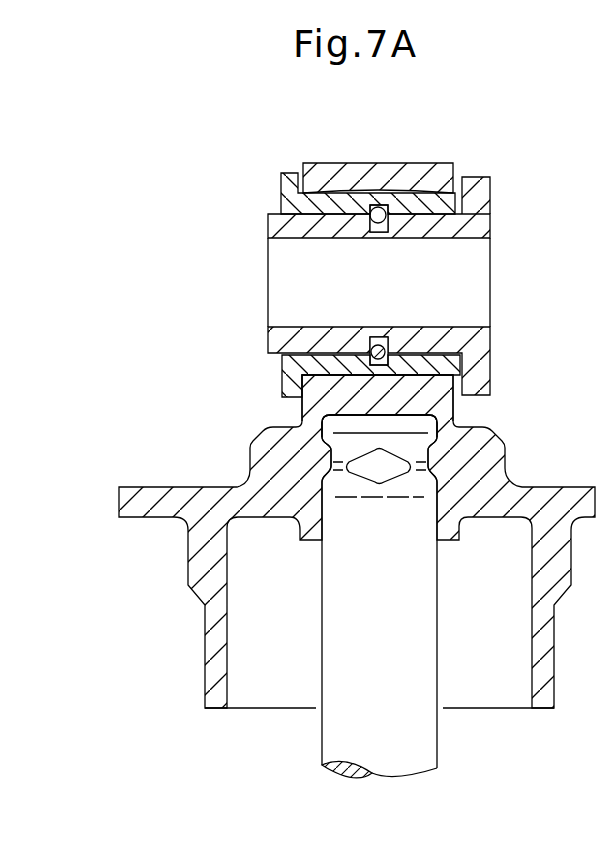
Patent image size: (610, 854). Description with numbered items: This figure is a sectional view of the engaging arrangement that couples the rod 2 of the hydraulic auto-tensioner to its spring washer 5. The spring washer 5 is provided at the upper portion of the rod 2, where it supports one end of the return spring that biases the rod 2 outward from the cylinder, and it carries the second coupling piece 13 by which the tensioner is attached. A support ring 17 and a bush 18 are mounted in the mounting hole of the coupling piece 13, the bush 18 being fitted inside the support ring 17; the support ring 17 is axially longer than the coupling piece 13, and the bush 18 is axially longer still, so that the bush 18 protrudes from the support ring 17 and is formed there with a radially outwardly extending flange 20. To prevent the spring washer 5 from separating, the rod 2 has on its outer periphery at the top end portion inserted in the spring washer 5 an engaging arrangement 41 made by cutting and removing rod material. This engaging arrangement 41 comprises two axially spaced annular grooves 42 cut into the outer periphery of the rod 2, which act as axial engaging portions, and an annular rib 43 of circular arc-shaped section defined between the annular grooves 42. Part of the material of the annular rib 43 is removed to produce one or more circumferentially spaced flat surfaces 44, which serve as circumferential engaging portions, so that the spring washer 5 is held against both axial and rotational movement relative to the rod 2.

The rod 2 is at (332, 730).
The spring washer 5 is at (140, 493).
The second coupling piece 13 is at (433, 168).
The support ring 17 is at (288, 203).
The bush 18 is at (267, 230).
The flange 20 is at (478, 195).
The engaging arrangement 41 is at (355, 446).
The annular grooves 42 is at (428, 480).
The annular rib 43 is at (325, 467).
The flat surfaces 44 is at (388, 455).